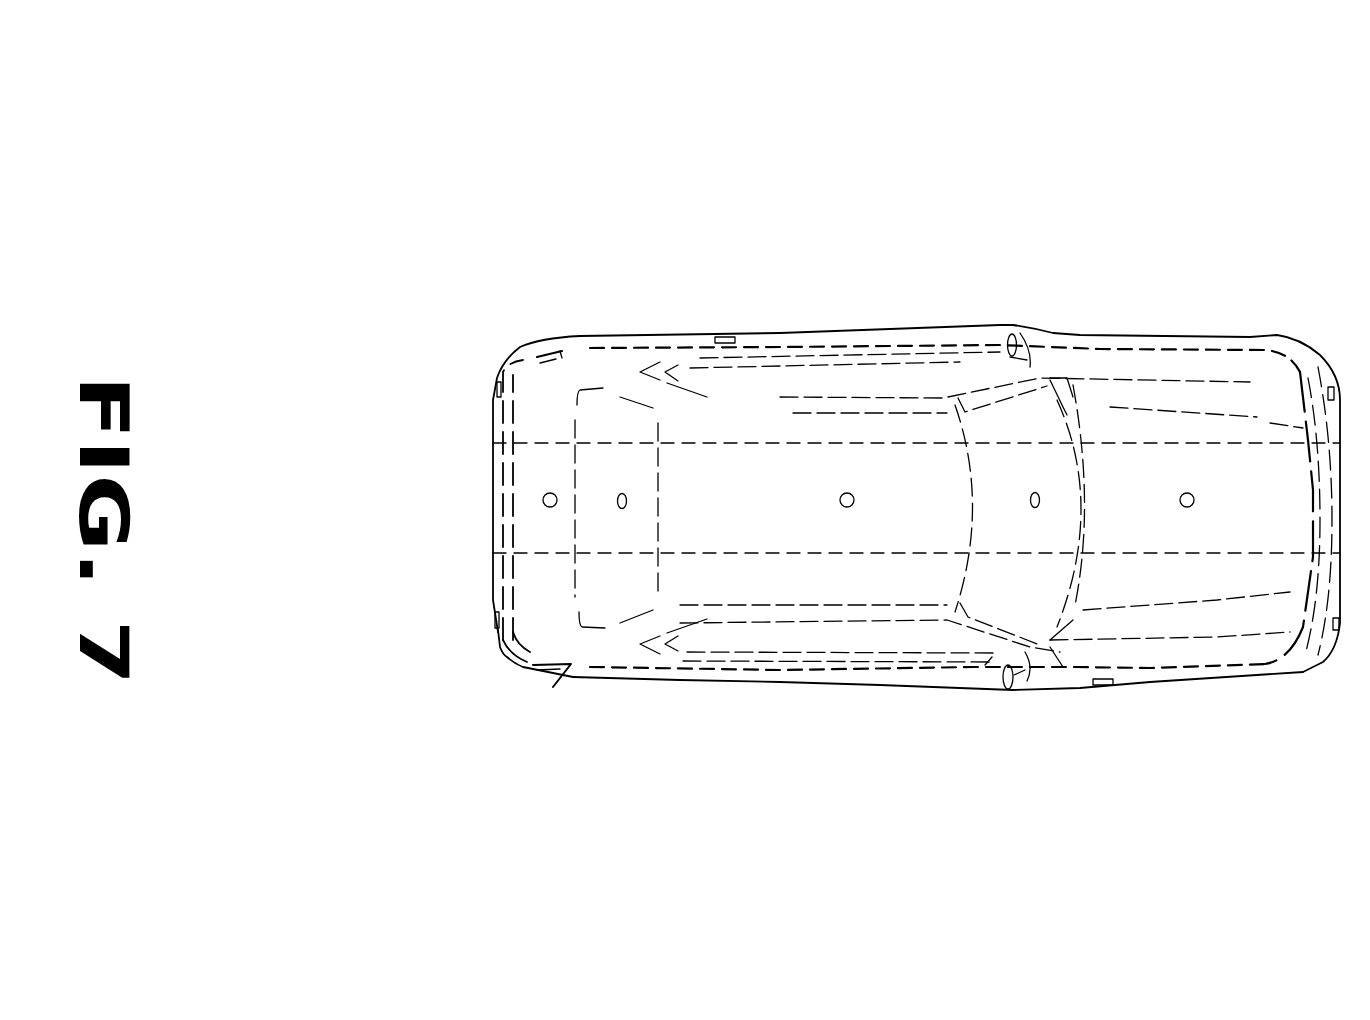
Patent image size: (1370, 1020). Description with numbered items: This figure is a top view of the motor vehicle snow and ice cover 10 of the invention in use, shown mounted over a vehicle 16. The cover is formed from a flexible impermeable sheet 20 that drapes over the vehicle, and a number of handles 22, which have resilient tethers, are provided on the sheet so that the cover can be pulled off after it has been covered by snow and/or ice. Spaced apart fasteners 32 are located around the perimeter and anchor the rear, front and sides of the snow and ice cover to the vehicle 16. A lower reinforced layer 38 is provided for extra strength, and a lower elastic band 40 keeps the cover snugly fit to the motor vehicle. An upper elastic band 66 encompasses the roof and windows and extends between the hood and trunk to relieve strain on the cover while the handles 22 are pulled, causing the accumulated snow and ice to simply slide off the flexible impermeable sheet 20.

The snow and ice cover 10 is at (1160, 190).
The vehicle 16 is at (892, 672).
The flexible impermeable sheet 20 is at (672, 680).
The handles 22 is at (553, 490).
The fasteners 32 is at (496, 614).
The lower reinforced layer 38 is at (843, 443).
The lower elastic band 40 is at (505, 655).
The upper elastic band 66 is at (560, 695).